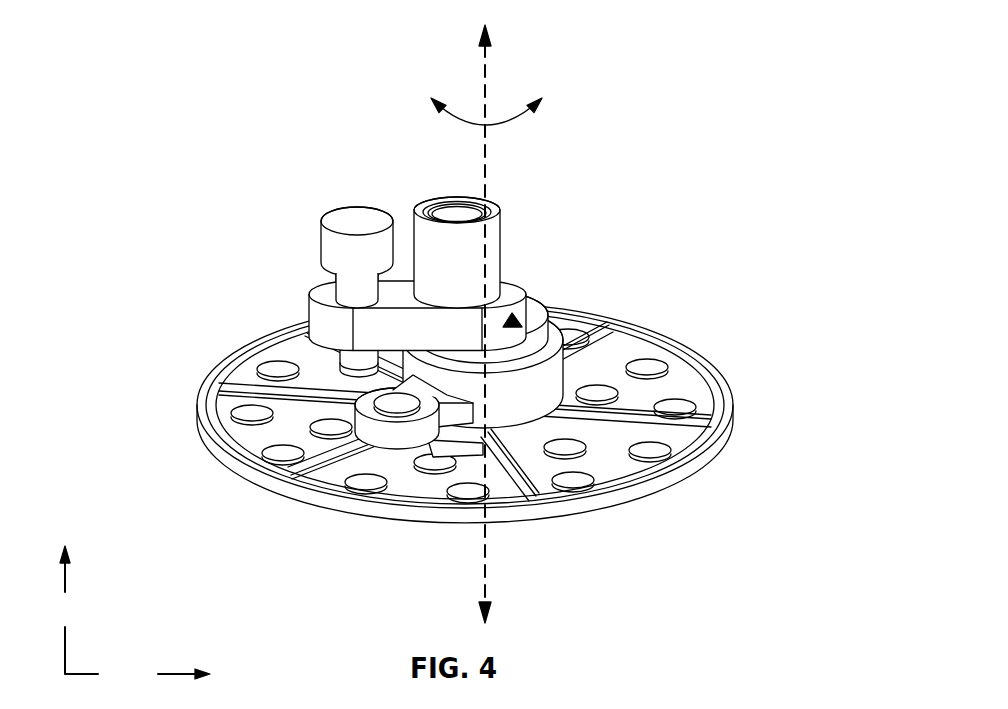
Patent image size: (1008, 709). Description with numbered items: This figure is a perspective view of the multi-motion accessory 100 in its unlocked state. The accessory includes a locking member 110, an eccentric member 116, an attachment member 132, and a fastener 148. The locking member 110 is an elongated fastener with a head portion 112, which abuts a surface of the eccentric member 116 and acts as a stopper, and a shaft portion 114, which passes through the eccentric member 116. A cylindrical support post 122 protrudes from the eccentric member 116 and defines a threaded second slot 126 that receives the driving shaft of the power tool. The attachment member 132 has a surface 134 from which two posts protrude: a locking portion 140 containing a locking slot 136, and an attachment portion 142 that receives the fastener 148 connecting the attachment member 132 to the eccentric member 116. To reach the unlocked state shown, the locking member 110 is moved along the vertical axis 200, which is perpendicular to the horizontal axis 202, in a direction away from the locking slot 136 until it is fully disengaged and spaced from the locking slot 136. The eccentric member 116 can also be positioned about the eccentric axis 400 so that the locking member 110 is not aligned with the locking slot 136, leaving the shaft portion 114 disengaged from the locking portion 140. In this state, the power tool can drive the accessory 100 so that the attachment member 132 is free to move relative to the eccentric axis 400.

The multi-motion accessory 100 is at (714, 125).
The locking member 110 is at (193, 213).
The head portion 112 is at (363, 252).
The shaft portion 114 is at (353, 358).
The eccentric member 116 is at (545, 302).
The support post 122 is at (443, 280).
The second slot 126 is at (438, 198).
The attachment member 132 is at (798, 320).
The surface 134 is at (598, 460).
The locking slot 136 is at (398, 402).
The locking portion 140 is at (407, 428).
The attachment portion 142 is at (530, 388).
The fastener 148 is at (505, 280).
The vertical axis 200 is at (73, 610).
The horizontal axis 202 is at (160, 677).
The eccentric axis 400 is at (486, 324).